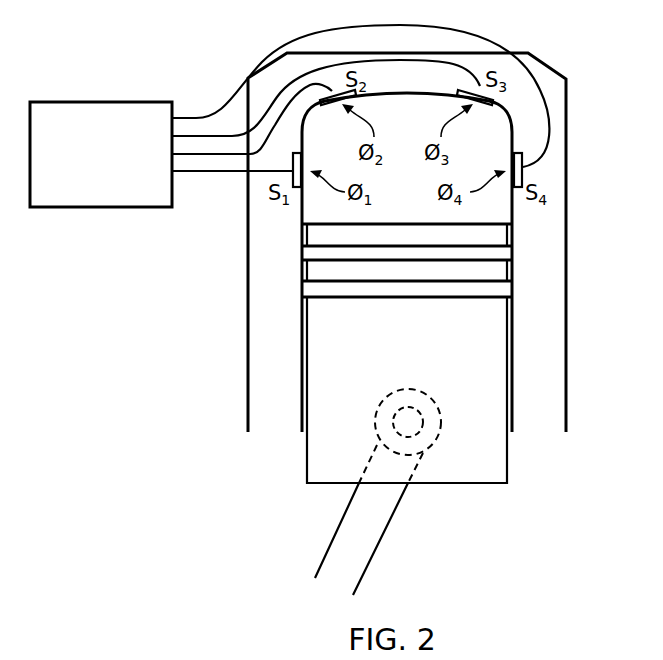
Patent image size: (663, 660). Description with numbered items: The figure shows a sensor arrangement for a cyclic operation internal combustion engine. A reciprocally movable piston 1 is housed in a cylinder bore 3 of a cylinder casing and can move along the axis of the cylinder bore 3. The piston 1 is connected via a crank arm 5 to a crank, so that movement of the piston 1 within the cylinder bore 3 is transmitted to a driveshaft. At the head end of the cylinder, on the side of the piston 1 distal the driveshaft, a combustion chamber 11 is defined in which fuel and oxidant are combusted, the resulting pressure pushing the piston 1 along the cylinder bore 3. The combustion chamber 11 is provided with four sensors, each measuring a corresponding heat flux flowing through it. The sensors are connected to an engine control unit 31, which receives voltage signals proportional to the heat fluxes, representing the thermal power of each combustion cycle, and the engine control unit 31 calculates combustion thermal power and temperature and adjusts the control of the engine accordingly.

The piston 1 is at (473, 348).
The cylinder bore 3 is at (515, 222).
The crank arm 5 is at (380, 537).
The combustion chamber 11 is at (407, 175).
The engine control unit 31 is at (105, 102).